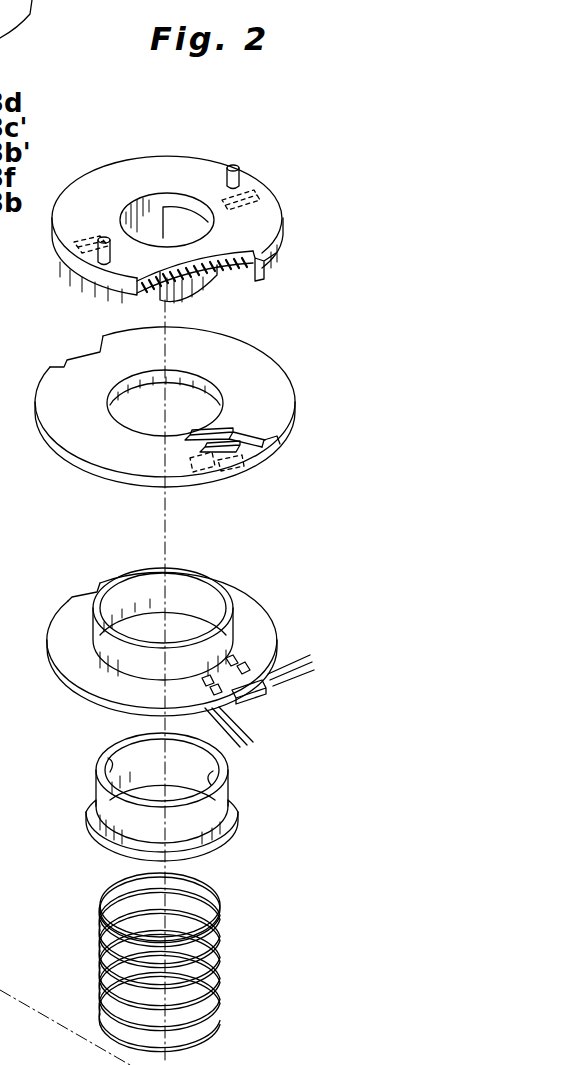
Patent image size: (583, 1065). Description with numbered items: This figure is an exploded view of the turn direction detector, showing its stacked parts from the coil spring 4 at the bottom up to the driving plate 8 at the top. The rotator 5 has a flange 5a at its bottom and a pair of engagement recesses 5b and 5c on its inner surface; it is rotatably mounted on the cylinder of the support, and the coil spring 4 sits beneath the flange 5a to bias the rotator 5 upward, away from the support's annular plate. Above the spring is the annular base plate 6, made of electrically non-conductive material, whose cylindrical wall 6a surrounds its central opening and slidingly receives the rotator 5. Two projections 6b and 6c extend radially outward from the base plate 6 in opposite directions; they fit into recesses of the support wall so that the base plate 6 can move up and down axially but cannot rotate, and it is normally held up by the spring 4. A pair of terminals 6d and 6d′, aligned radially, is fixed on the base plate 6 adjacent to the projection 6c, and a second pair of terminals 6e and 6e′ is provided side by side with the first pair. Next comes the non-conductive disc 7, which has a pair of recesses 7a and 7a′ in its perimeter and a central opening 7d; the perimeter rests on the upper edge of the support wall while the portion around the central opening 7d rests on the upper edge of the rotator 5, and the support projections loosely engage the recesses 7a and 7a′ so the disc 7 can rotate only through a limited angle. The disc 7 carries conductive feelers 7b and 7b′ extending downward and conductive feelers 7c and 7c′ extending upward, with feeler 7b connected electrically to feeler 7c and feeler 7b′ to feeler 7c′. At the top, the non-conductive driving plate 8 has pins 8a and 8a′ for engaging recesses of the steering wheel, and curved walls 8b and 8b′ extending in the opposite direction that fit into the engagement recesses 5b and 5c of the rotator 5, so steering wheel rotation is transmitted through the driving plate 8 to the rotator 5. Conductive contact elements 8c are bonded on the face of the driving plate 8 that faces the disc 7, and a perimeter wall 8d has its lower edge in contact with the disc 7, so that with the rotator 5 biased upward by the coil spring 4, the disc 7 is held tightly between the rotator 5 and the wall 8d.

The coil spring 4 is at (220, 967).
The rotator 5 is at (220, 817).
The flange 5a is at (100, 843).
The engagement recess 5b is at (108, 770).
The engagement recess 5c is at (210, 780).
The annular base plate 6 is at (240, 585).
The cylindrical wall 6a is at (145, 592).
The projection 6b is at (78, 582).
The projection 6c is at (243, 693).
The terminal 6d is at (202, 682).
The terminal 6d′ is at (213, 688).
The terminal 6e is at (235, 658).
The terminal 6e′ is at (247, 663).
The disc 7 is at (280, 373).
The recess 7a is at (78, 355).
The recess 7a′ is at (257, 453).
The feeler 7b is at (192, 467).
The feeler 7b′ is at (225, 473).
The feeler 7c is at (223, 437).
The feeler 7c′ is at (237, 450).
The central opening 7d is at (200, 383).
The driving plate 8 is at (194, 156).
The pin 8a is at (103, 262).
The pin 8a′ is at (236, 167).
The curved wall 8b is at (210, 277).
The curved wall 8b′ is at (150, 222).
The contact element 8c is at (88, 240).
The wall 8d is at (283, 262).